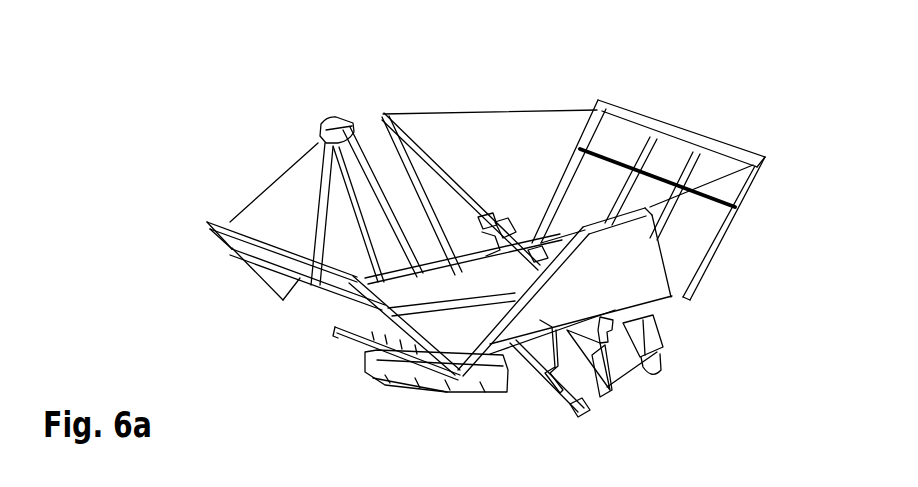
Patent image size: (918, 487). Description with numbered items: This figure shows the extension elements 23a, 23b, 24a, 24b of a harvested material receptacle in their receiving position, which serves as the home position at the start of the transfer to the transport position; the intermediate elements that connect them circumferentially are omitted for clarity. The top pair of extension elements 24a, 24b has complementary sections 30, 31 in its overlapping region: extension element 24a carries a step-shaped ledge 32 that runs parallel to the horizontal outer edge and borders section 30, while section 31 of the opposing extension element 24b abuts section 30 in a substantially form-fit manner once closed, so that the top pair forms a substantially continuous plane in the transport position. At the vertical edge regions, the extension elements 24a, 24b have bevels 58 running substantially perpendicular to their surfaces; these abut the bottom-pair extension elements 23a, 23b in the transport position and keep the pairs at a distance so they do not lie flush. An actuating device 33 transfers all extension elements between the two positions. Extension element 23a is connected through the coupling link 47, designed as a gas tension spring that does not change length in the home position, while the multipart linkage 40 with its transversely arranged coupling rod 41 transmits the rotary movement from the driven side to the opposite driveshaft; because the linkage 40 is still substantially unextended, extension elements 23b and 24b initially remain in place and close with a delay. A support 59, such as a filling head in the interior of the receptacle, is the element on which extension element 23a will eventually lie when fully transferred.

The extension element 23a is at (347, 108).
The extension element 23b is at (670, 322).
The extension element 24a is at (226, 212).
The extension element 24b is at (645, 98).
The complementary section 30 is at (212, 251).
The complementary section 31 is at (710, 112).
The step-shaped ledge 32 is at (283, 300).
The actuating device 33 is at (467, 270).
The multipart linkage 40 is at (489, 316).
The coupling rod 41 is at (418, 300).
The coupling link 47 is at (500, 225).
The bevel 58 is at (750, 184).
The support 59 is at (536, 248).